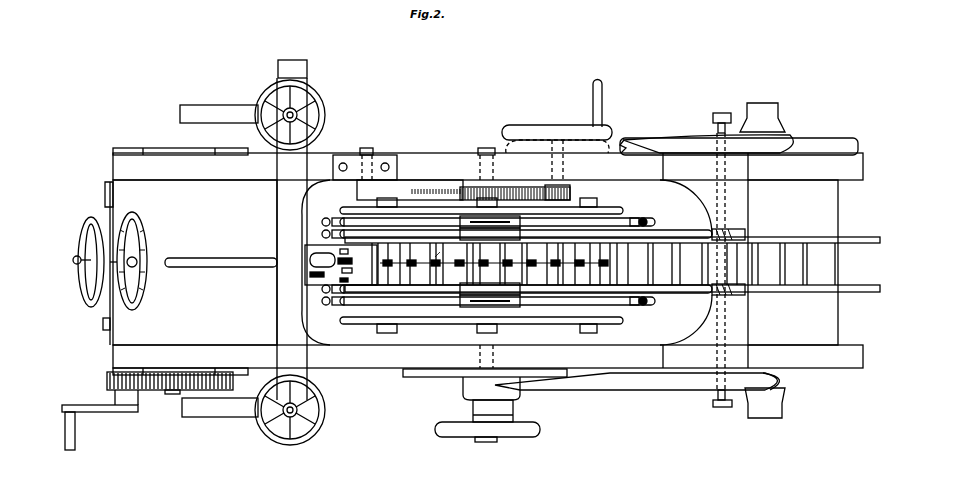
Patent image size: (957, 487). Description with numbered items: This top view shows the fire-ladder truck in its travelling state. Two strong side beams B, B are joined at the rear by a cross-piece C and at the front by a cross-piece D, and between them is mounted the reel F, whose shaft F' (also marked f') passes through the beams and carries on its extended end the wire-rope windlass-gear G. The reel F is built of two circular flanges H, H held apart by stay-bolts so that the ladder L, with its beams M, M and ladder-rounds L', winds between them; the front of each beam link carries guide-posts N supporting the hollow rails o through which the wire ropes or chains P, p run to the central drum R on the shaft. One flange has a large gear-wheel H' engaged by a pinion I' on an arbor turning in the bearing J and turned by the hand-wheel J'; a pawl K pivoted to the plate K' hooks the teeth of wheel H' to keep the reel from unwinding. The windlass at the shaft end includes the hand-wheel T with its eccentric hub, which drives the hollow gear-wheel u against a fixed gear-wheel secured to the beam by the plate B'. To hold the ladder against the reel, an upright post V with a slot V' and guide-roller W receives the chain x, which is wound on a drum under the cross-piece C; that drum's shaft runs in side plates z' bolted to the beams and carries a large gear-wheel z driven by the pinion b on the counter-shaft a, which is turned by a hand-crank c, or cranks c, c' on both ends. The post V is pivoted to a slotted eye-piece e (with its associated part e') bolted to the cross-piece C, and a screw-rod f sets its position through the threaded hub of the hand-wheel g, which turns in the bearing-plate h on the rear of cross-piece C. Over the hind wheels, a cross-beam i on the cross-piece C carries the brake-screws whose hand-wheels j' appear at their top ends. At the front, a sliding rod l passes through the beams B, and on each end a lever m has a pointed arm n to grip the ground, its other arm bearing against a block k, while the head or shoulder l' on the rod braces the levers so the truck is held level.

The side beams B is at (488, 254).
The plate B' is at (485, 380).
The cross-piece C is at (191, 262).
The cross-piece D is at (793, 262).
The cross-beam i is at (292, 230).
The hand wheels j' is at (252, 262).
The side plates z' is at (180, 255).
The pinion b is at (164, 381).
The sliding rod l is at (440, 262).
The counter-shaft a is at (100, 406).
The hand-crank c is at (87, 429).
The hand-wheel g is at (91, 262).
The screw-rod f is at (77, 262).
The arm n is at (326, 307).
The hollow rails o is at (140, 270).
The wire rope p is at (117, 275).
The bearing-plate h is at (103, 317).
The reel-shaft f' is at (221, 262).
The block k is at (507, 271).
The plate K' is at (365, 158).
The pawl K is at (410, 190).
The gear-wheel H' is at (515, 193).
The pinion I' is at (561, 191).
The reel-shaft F' is at (486, 145).
The hand-wheel J' is at (557, 110).
The bearing J is at (557, 146).
The gear-wheel z is at (618, 146).
The reel F is at (481, 265).
The circular flanges H is at (586, 266).
The winding-drum R is at (497, 258).
The beams M is at (526, 267).
The guide-posts N is at (478, 267).
The slotted eye-piece e is at (325, 261).
The stop e' is at (346, 279).
The wire rope P is at (728, 263).
The ladder L is at (612, 264).
The ladder-rounds L' is at (538, 266).
The chain x is at (494, 255).
The upright post V is at (341, 265).
The slot V' is at (341, 248).
The guide-roller W is at (342, 272).
The stop c' is at (318, 258).
The lever m is at (676, 262).
The shoulder l' is at (749, 260).
The hollow gear-wheel u is at (491, 388).
The wire-rope windlass-gear G is at (482, 408).
The hand-wheel T is at (487, 432).